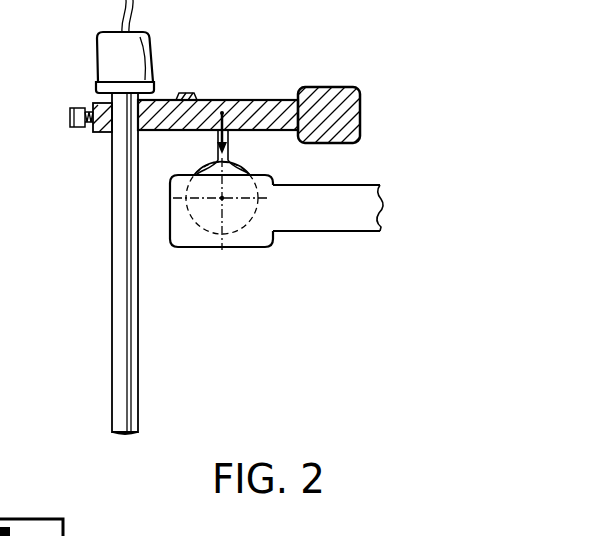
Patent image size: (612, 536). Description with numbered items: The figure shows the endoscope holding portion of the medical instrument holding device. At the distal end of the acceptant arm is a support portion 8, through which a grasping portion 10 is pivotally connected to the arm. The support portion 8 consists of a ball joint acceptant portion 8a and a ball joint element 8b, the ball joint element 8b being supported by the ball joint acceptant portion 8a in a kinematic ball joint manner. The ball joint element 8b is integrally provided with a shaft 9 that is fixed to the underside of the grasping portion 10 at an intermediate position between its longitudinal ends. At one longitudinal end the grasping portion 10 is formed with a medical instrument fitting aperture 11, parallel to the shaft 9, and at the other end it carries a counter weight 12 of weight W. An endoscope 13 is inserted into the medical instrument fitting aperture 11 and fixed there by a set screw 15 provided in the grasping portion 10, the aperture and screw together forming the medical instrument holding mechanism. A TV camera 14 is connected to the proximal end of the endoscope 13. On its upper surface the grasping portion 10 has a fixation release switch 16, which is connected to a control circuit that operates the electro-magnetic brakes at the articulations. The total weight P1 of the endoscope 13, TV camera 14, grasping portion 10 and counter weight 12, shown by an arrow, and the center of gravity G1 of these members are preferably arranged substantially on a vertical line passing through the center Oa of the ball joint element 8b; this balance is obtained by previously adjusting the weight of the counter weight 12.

The support portion 8 is at (360, 160).
The ball joint acceptant portion 8a is at (264, 243).
The ball joint element 8b is at (240, 166).
The shaft 9 is at (240, 147).
The grasping portion 10 is at (278, 100).
The medical instrument fitting aperture 11 is at (103, 145).
The counter weight 12 is at (358, 116).
The endoscope 13 is at (112, 243).
The TV camera 14 is at (140, 40).
The set screw 15 is at (69, 119).
The fixation release switch 16 is at (184, 93).
The center of gravity G1 is at (226, 102).
The total weight P1 is at (219, 134).
The center of the ball joint element Oa is at (222, 204).